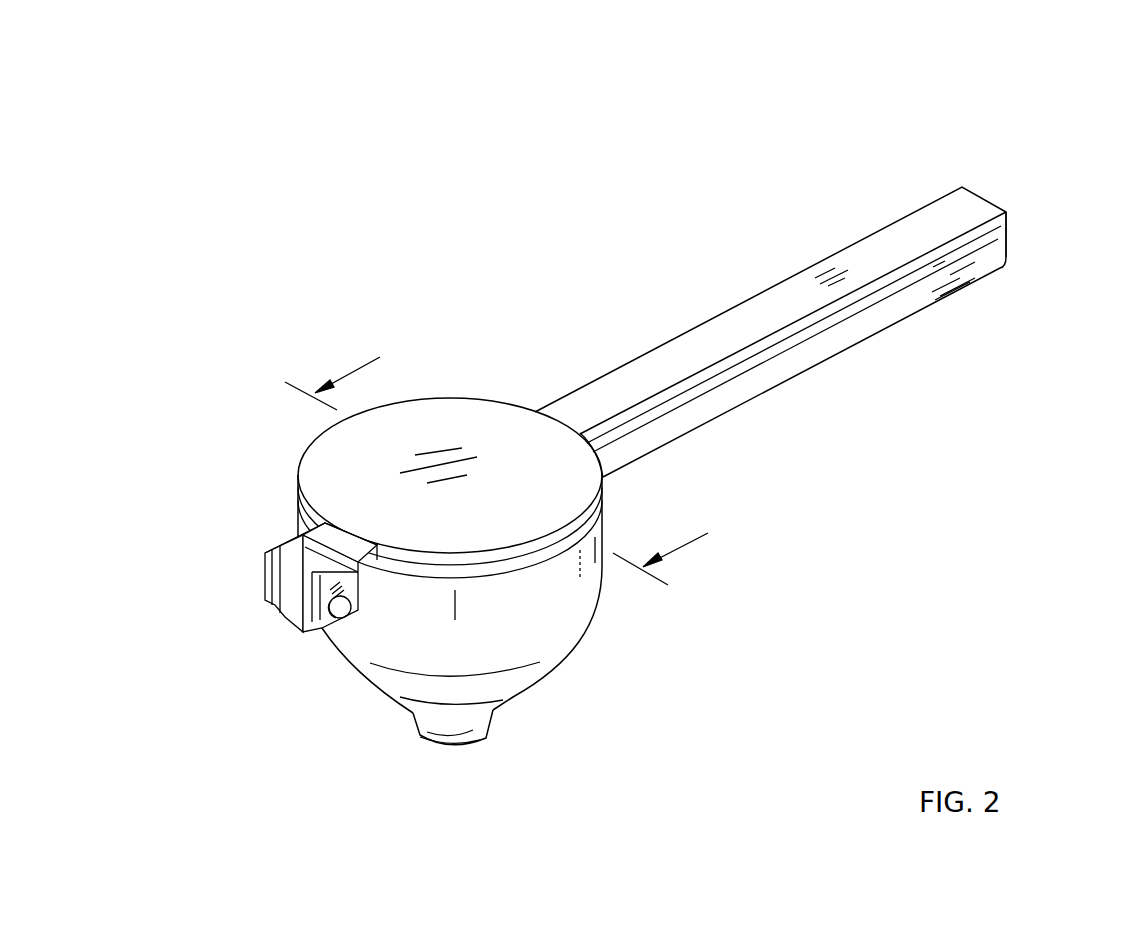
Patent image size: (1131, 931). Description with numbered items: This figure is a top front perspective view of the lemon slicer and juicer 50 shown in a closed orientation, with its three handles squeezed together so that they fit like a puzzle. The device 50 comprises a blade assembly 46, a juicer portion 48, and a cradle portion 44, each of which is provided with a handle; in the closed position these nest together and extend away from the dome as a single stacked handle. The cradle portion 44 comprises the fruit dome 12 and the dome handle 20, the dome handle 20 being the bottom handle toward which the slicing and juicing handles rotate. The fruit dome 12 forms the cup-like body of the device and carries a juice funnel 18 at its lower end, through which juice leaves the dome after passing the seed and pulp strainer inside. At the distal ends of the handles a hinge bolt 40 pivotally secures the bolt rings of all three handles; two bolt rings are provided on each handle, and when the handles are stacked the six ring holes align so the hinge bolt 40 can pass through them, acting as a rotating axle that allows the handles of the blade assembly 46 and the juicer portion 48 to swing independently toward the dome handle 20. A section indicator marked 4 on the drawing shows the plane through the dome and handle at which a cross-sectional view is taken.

The lemon slicer and juicer 50 is at (646, 425).
The dome handle 20 is at (818, 314).
The cradle portion 44 is at (750, 403).
The juicer portion 48 is at (876, 252).
The blade assembly 46 is at (1007, 228).
The fruit dome 12 is at (487, 610).
The juice funnel 18 is at (478, 742).
The hinge bolt 40 is at (330, 630).
The section line 4- 4 is at (513, 456).